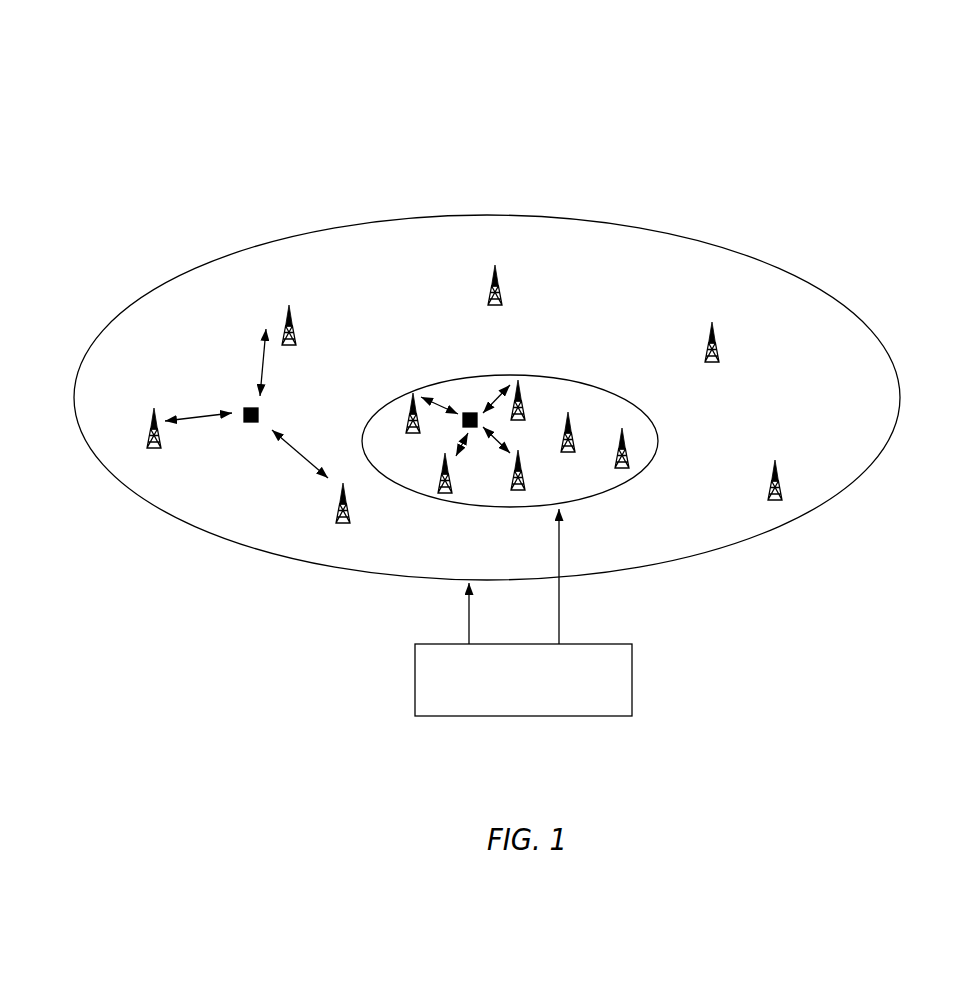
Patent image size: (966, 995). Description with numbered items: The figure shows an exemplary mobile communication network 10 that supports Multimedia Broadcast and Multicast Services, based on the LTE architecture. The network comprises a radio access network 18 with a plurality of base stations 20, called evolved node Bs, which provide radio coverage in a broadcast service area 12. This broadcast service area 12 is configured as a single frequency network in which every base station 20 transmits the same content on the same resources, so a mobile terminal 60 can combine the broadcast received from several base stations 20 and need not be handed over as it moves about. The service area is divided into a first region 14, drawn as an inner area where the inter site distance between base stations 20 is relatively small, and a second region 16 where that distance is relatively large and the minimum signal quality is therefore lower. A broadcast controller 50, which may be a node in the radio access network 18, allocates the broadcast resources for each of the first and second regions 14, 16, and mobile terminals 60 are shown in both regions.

The mobile communication network 10 is at (693, 137).
The broadcast service area 12 is at (715, 243).
The first region 14 is at (532, 393).
The second region 16 is at (283, 503).
The radio access network 18 is at (723, 605).
The base station 20 is at (778, 498).
The broadcast controller 50 is at (593, 716).
The mobile terminal 60 is at (258, 413).